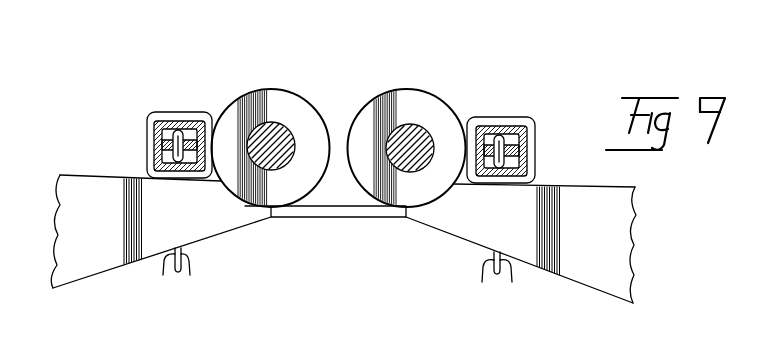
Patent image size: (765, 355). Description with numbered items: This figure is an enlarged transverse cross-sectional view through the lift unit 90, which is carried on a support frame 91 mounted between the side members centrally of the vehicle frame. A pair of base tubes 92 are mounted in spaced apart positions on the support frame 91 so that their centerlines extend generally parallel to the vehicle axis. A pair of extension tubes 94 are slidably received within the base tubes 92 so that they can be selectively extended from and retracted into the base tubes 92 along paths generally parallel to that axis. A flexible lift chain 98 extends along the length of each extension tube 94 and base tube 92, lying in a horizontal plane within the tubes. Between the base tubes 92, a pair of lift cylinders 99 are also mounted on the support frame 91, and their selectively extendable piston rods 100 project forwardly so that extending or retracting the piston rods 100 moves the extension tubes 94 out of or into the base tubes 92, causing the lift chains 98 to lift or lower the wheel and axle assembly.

The lift unit 90 is at (343, 177).
The support frame 91 is at (240, 222).
The base tubes 92 is at (172, 103).
The extension tubes 94 is at (157, 146).
The lift chains 98 is at (178, 134).
The lift cylinders 99 is at (279, 80).
The piston rods 100 is at (264, 131).